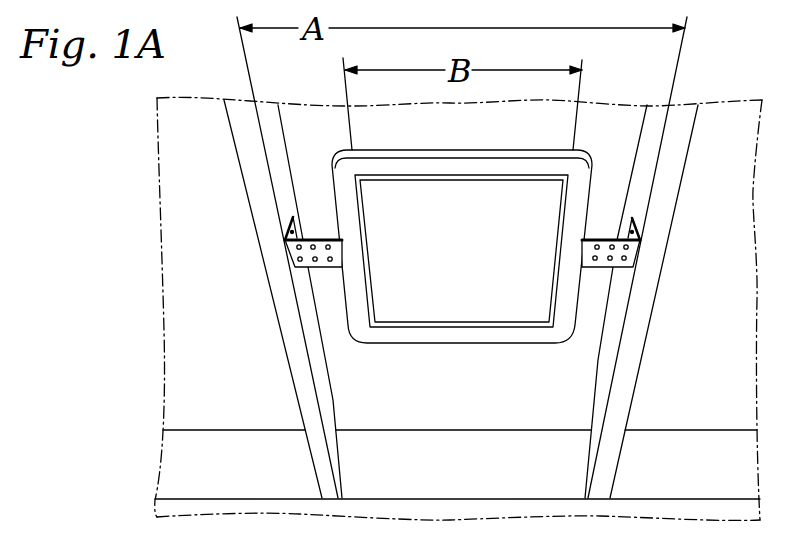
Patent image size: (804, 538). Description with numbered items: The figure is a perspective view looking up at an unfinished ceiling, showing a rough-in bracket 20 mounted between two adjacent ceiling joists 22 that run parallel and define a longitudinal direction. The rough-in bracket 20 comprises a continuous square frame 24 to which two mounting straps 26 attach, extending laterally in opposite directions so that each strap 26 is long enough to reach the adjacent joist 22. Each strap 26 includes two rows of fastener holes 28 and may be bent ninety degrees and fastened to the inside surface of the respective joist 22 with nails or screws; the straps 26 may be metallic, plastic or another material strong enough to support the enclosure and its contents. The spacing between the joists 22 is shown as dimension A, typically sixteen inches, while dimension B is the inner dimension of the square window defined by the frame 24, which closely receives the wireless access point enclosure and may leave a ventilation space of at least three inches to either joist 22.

The rough-in bracket 20 is at (460, 287).
The ceiling joists 22 is at (292, 377).
The square frame 24 is at (447, 340).
The mounting straps 26 is at (327, 263).
The fastener holes 28 is at (600, 253).